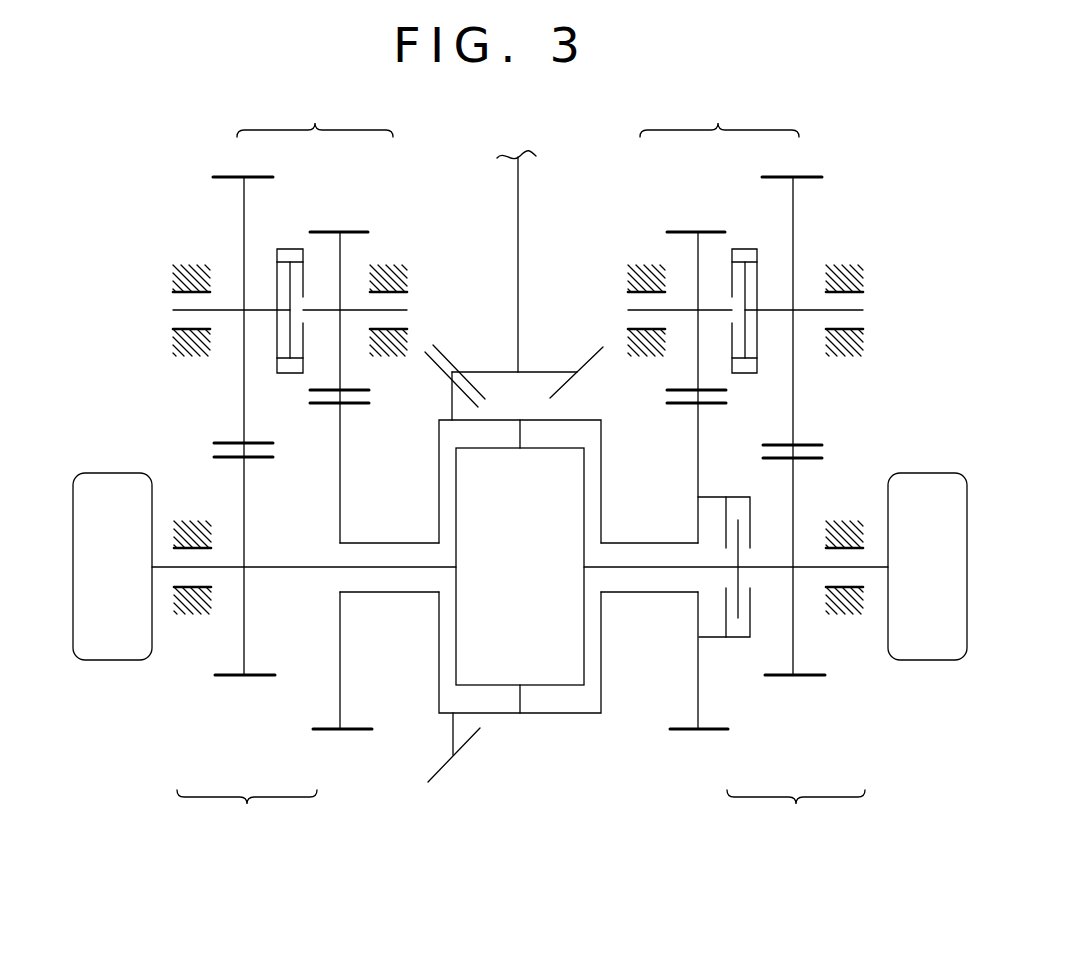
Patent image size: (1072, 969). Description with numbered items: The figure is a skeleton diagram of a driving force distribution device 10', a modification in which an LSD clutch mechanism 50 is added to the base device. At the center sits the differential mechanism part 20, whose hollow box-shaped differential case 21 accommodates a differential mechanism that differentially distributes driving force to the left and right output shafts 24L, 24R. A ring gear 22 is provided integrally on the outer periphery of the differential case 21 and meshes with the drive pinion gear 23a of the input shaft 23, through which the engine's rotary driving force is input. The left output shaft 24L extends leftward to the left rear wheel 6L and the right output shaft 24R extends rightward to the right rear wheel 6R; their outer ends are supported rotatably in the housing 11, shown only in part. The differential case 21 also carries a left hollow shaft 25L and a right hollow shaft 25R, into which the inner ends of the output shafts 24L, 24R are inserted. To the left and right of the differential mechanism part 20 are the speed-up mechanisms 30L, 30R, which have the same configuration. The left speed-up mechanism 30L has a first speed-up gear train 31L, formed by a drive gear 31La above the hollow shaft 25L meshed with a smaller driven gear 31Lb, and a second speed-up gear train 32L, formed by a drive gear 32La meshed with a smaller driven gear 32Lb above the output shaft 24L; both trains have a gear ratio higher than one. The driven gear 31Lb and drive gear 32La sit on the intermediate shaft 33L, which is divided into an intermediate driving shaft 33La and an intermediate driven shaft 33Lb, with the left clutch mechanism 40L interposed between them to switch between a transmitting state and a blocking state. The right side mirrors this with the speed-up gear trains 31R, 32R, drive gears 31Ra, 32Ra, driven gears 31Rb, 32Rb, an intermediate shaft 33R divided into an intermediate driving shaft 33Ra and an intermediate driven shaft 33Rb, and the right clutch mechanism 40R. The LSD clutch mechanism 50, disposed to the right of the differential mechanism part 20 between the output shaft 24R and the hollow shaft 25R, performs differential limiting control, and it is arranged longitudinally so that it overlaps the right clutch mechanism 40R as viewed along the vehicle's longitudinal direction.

The left rear wheel 6L is at (110, 473).
The right rear wheel 6R is at (927, 473).
The driving force distribution device 10' is at (1002, 133).
The housing 11 is at (195, 265).
The differential mechanism part 20 is at (548, 720).
The differential case 21 is at (439, 492).
The ring gear 22 is at (447, 768).
The input shaft 23 is at (518, 195).
The drive pinion gear 23a is at (600, 352).
The left output shaft 24L is at (291, 570).
The right output shaft 24R is at (805, 565).
The left hollow shaft 25L is at (388, 594).
The right hollow shaft 25R is at (647, 594).
The left speed-up mechanism 30L is at (247, 814).
The right speed-up mechanism 30R is at (796, 814).
The speed-up gear train 31L is at (342, 740).
The drive gear 31La is at (363, 733).
The driven gear 31Lb is at (355, 232).
The speed-up gear train 31R is at (702, 742).
The drive gear 31Ra is at (680, 733).
The driven gear 31Rb is at (680, 232).
The speed-up gear train 32L is at (249, 698).
The drive gear 32La is at (213, 177).
The driven gear 32Lb is at (228, 677).
The speed-up gear train 32R is at (795, 702).
The drive gear 32Ra is at (822, 177).
The driven gear 32Rb is at (813, 678).
The intermediate shaft 33L is at (315, 117).
The intermediate driving shaft 33La is at (315, 310).
The intermediate driven shaft 33Lb is at (260, 310).
The intermediate shaft 33R is at (719, 117).
The intermediate driving shaft 33Ra is at (718, 310).
The intermediate driven shaft 33Rb is at (775, 310).
The left clutch mechanism 40L is at (291, 380).
The right clutch mechanism 40R is at (745, 380).
The LSD clutch mechanism 50 is at (737, 495).